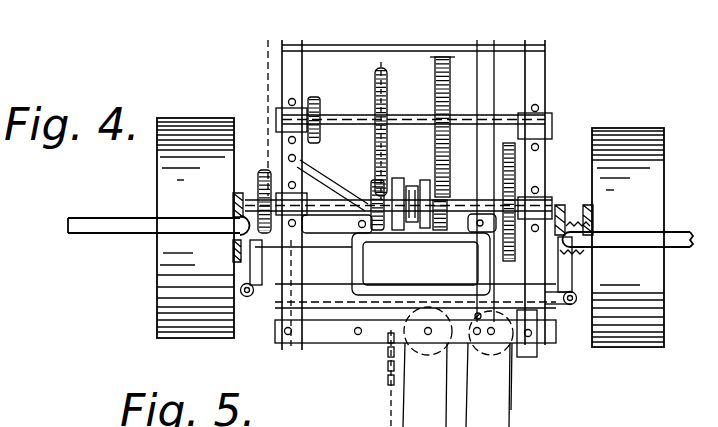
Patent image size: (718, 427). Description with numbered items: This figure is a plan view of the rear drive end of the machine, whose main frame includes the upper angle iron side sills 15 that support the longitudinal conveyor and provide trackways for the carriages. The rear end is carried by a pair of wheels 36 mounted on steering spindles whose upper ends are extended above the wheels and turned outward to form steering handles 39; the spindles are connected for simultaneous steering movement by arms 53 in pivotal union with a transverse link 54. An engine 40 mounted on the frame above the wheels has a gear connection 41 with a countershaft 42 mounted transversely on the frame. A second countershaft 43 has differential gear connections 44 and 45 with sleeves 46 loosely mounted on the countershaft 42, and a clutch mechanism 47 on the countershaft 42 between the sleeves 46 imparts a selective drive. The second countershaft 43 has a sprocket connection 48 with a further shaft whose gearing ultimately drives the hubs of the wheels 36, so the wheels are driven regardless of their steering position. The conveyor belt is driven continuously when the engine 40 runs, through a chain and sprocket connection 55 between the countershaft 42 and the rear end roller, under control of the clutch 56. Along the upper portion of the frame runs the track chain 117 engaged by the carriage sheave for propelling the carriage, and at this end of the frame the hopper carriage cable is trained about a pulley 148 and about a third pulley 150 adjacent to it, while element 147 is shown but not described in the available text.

The upper angle iron side sills 15 is at (292, 308).
The wheels 36 is at (224, 251).
The steering handles 39 is at (135, 226).
The engine 40 is at (421, 264).
The gear connection 41 is at (505, 273).
The countershaft 42 is at (464, 200).
The second countershaft 43 is at (352, 95).
The differential gear connection 44 is at (384, 106).
The differential gear connection 45 is at (436, 101).
The sleeves 46 is at (385, 183).
The clutch mechanism 47 is at (425, 182).
The sprocket connection 48 is at (311, 147).
The arms 53 is at (253, 268).
The transverse link 54 is at (560, 313).
The chain and sprocket connection 55 is at (267, 97).
The clutch 56 is at (255, 195).
The track chain 117 is at (386, 373).
The rope 147 is at (512, 405).
The pulley 148 is at (433, 348).
The third pulley 150 is at (493, 348).